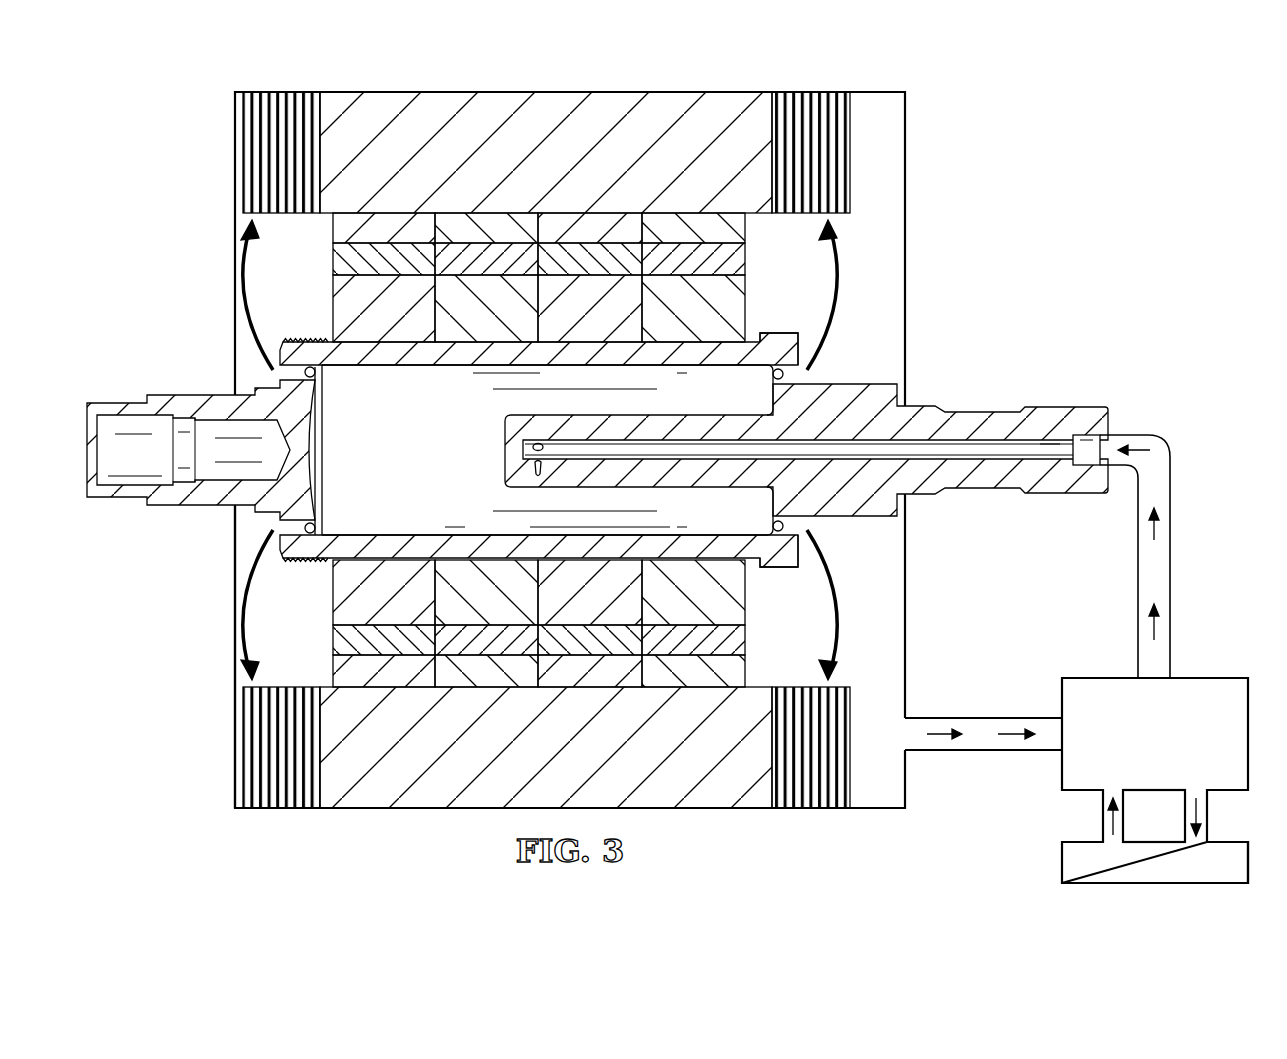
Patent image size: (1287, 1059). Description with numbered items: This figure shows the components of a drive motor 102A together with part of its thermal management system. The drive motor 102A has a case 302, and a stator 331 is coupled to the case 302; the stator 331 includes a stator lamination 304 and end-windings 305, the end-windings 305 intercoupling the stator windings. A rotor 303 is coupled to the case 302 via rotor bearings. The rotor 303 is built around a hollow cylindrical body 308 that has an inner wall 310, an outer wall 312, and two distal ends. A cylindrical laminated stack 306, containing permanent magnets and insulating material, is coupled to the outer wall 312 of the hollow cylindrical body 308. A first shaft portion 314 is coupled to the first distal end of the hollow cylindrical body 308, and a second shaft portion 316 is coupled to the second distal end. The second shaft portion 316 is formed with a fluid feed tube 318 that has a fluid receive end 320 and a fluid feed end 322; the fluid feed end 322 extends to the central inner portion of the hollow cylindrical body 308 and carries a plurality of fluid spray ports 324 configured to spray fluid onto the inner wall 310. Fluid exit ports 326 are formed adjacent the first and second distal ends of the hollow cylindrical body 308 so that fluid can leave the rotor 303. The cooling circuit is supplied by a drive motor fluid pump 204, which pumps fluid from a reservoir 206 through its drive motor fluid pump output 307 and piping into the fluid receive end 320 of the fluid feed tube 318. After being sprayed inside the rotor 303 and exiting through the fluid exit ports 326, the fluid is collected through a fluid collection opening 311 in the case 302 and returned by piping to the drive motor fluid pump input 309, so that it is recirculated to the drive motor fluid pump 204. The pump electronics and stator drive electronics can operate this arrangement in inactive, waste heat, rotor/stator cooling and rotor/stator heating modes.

The drive motor 102A is at (597, 452).
The case 302 is at (876, 90).
The rotor 303 is at (186, 620).
The stator lamination 304 is at (527, 167).
The end-windings 305 is at (288, 214).
The cylindrical laminated stack 306 is at (720, 450).
The drive motor fluid pump output 307 is at (1157, 678).
The hollow cylindrical body 308 is at (782, 333).
The drive motor fluid pump input 309 is at (1060, 741).
The inner wall 310 is at (545, 425).
The fluid collection opening 311 is at (899, 735).
The outer wall 312 is at (334, 339).
The first shaft portion 314 is at (195, 400).
The second shaft portion 316 is at (960, 405).
The fluid feed tube 318 is at (1050, 461).
The fluid receive end 320 is at (1090, 437).
The fluid feed end 322 is at (503, 465).
The fluid spray ports 324 is at (542, 473).
The fluid exit ports 326 is at (316, 373).
The stator 331 is at (360, 90).
The drive motor fluid pump 204 is at (1138, 772).
The reservoir 206 is at (1030, 870).